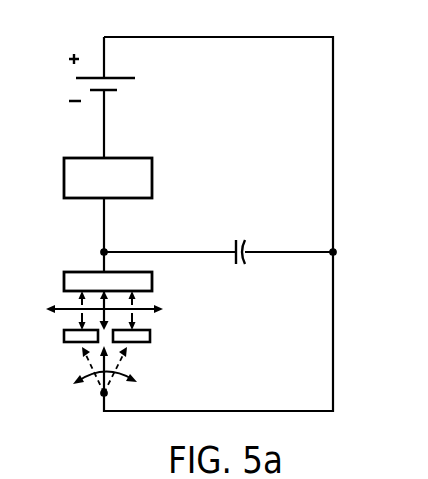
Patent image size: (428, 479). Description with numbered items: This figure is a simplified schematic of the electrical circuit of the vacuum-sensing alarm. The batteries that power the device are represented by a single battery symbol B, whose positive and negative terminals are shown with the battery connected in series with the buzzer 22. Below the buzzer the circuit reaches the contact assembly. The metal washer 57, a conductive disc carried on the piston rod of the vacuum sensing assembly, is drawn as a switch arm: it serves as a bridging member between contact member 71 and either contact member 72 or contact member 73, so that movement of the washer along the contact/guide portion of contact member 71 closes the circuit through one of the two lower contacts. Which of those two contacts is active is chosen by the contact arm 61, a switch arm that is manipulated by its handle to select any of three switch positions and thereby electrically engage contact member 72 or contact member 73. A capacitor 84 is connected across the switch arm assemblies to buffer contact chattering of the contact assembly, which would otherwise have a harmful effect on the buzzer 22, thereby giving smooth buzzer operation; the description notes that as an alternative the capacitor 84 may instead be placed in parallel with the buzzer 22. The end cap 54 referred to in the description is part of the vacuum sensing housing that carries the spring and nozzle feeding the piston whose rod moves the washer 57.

The battery symbol B is at (111, 77).
The buzzer 22 is at (64, 180).
The capacitor 84 is at (246, 242).
The metal washer 57 is at (108, 291).
The contact member 71 is at (88, 272).
The end cap 54 is at (81, 284).
The contact member 72 is at (64, 341).
The contact member 73 is at (150, 334).
The contact arm 61 is at (107, 364).